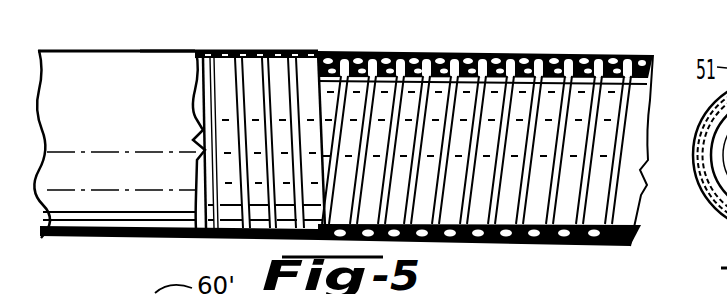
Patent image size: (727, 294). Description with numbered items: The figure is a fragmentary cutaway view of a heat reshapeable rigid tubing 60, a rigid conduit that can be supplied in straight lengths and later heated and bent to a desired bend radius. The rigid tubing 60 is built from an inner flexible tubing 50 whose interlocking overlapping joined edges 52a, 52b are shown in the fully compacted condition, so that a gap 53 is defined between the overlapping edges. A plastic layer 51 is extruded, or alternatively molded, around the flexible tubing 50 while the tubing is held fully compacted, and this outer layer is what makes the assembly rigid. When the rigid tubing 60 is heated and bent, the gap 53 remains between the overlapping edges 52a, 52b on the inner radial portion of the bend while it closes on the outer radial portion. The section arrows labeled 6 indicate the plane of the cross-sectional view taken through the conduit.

The flexible tubing 50 is at (226, 131).
The plastic layer 51 is at (128, 118).
The overlapping joined edge 52a is at (537, 39).
The overlapping joined edge 52b is at (495, 53).
The gap 53 is at (421, 53).
The heat reshapeable rigid tubing 60 is at (170, 42).
The section line 6- 6 is at (139, 51).